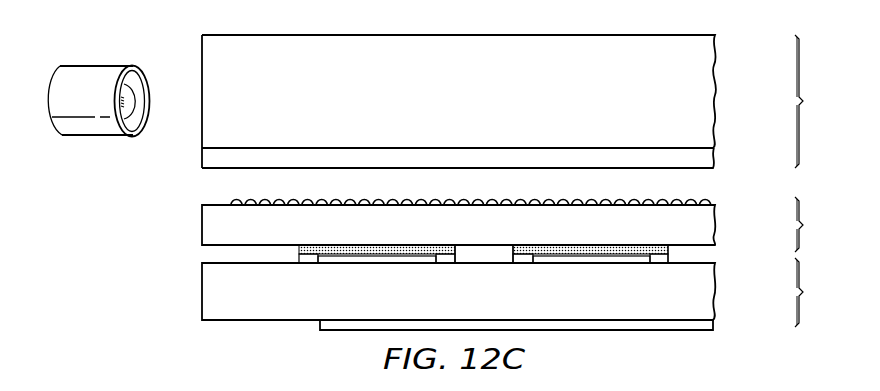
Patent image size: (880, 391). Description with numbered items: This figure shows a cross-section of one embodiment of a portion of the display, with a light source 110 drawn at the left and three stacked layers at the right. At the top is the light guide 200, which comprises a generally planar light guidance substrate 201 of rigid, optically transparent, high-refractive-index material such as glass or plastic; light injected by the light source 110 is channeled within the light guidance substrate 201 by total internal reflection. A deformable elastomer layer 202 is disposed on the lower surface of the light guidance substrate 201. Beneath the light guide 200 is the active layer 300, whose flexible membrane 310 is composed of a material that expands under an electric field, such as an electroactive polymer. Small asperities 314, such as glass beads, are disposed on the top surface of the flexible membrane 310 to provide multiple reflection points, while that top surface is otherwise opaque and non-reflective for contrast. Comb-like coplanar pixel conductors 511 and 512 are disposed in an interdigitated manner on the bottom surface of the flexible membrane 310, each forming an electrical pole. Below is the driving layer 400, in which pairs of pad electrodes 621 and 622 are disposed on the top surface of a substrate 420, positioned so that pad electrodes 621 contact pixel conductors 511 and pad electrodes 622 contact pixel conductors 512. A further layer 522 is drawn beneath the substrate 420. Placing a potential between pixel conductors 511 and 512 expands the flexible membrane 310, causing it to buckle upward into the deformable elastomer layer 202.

The light source 110 is at (91, 136).
The driving layer 400 is at (109, 15).
The light guide 200 is at (818, 101).
The light guidance substrate 201 is at (720, 52).
The deformable elastomer layer 202 is at (718, 158).
The active layer 300 is at (818, 224).
The flexible membrane 310 is at (718, 232).
The small asperities 314 is at (712, 199).
The pixel conductor 511 is at (670, 255).
The pixel conductor 512 is at (378, 251).
The pad electrode 621 is at (308, 258).
The pad electrode 622 is at (445, 258).
The substrate 420 is at (720, 288).
The bottom layer 522 is at (716, 329).